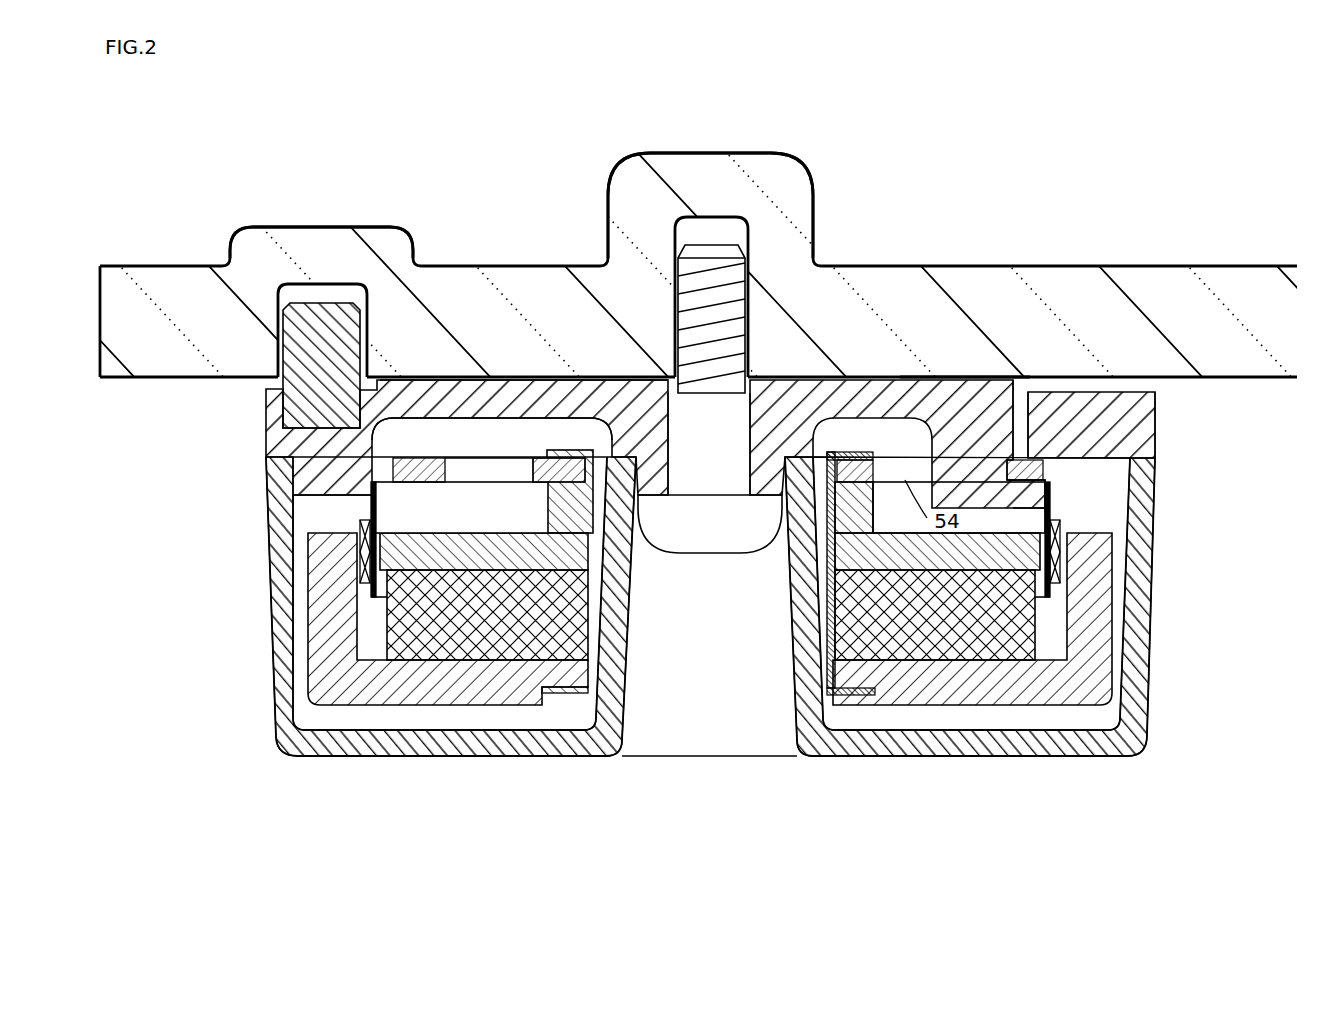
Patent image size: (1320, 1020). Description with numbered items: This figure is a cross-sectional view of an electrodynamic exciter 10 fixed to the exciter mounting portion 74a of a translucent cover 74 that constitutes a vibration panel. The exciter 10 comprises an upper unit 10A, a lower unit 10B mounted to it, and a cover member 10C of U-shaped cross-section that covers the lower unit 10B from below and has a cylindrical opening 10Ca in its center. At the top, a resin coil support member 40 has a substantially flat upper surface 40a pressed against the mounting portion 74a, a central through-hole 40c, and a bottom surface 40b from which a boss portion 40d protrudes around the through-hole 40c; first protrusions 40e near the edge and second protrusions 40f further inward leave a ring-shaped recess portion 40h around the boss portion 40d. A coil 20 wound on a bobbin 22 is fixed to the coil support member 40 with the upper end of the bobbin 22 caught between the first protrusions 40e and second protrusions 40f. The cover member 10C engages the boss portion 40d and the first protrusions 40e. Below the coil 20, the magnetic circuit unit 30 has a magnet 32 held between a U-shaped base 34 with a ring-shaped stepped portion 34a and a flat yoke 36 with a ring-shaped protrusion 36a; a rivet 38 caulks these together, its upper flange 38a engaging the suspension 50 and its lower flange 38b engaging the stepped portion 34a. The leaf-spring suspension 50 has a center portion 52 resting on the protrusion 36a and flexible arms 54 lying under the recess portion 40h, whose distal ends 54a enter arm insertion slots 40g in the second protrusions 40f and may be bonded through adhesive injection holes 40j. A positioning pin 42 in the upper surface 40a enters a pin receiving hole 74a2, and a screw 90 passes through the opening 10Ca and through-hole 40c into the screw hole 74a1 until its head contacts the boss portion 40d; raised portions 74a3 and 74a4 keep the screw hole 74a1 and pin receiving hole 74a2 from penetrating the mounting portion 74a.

The electrodynamic exciter 10 is at (278, 785).
The upper unit 10A is at (963, 370).
The lower unit 10B is at (972, 715).
The cover member 10C is at (770, 634).
The cylindrical opening 10Ca is at (688, 671).
The coil 20 is at (356, 565).
The bobbin 22 is at (368, 508).
The magnetic circuit unit 30 is at (450, 660).
The magnet 32 is at (457, 643).
The base 34 is at (395, 697).
The ring-shaped stepped portion 34a is at (855, 705).
The yoke 36 is at (513, 560).
The ring-shaped protrusion 36a is at (848, 510).
The rivet 38 is at (782, 573).
The upper flange 38a is at (853, 457).
The lower flange 38b is at (850, 695).
The coil support member 40 is at (663, 413).
The upper surface 40a is at (558, 375).
The bottom surface 40b is at (1158, 517).
The through-hole 40c is at (735, 451).
The boss portion 40d is at (655, 487).
The first protrusions 40e is at (325, 470).
The second protrusions 40f is at (1033, 497).
The arm insertion slots 40g is at (1158, 415).
The ring-shaped recess portion 40h is at (523, 420).
The adhesive injection hole 40j is at (1023, 390).
The positioning pin 42 is at (322, 303).
The suspension 50 is at (433, 446).
The center portion 52 is at (858, 470).
The flexible arms 54 is at (418, 475).
The distal end 54a is at (1035, 470).
The translucent cover 74 is at (1160, 268).
The exciter mounting portion 74a is at (167, 293).
The screw hole 74a1 is at (682, 297).
The pin receiving hole 74a2 is at (283, 335).
The raised portion 74a3 is at (642, 190).
The raised portion 74a4 is at (290, 242).
The screw 90 is at (697, 560).